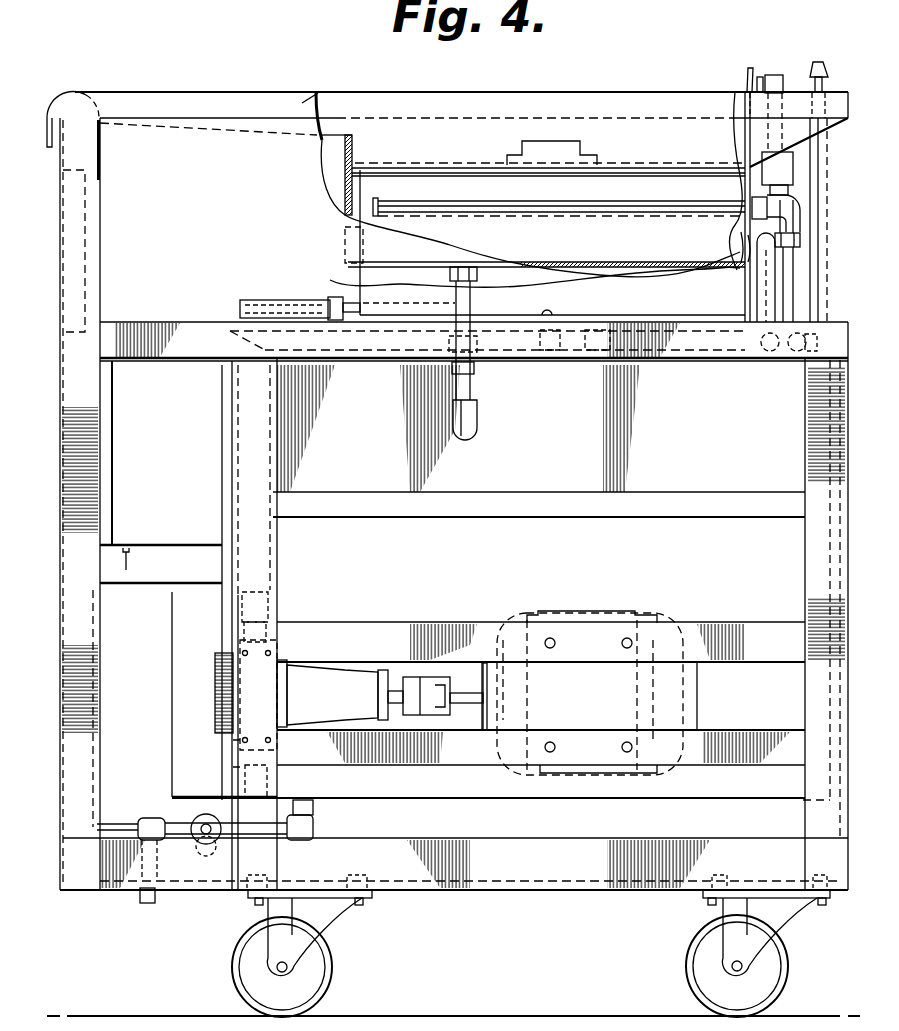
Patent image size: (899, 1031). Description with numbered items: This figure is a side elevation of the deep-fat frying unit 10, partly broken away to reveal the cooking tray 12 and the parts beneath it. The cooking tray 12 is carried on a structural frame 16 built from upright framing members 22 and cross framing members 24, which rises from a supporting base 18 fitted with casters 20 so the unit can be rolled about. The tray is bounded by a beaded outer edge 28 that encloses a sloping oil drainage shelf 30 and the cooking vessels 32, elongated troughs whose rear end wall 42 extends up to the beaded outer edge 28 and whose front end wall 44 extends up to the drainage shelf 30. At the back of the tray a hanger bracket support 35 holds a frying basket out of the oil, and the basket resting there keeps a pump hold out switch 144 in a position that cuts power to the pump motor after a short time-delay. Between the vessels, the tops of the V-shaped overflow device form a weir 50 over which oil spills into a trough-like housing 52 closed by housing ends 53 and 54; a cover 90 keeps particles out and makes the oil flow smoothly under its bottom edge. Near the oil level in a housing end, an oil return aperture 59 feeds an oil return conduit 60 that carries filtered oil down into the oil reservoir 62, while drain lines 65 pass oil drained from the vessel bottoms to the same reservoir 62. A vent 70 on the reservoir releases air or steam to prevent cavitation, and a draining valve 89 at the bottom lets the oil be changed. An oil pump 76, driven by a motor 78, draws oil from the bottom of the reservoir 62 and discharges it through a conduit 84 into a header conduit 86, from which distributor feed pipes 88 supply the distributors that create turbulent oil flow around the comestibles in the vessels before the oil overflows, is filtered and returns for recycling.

The deep-fat frying unit 10 is at (641, 90).
The cooking tray 12 is at (330, 134).
The structural frame 16 is at (58, 372).
The supporting base 18 is at (97, 891).
The casters 20 is at (331, 961).
The upright framing members 22 is at (78, 653).
The cross framing members 24 is at (173, 322).
The beaded outer edge 28 is at (50, 106).
The sloping oil drainage shelf 30 is at (352, 138).
The cooking vessels 32 is at (379, 186).
The hanger bracket supports 35 is at (752, 67).
The rear end wall 42 is at (735, 192).
The front end wall 44 is at (323, 176).
The weir 50 is at (440, 178).
The trough-like housing 52 is at (378, 284).
The housing end 53 is at (360, 277).
The housing end 54 is at (740, 298).
The oil return aperture 59 is at (736, 240).
The oil return conduit 60 is at (767, 277).
The oil reservoir 62 is at (492, 559).
The drain lines 65 is at (472, 388).
The vent 70 is at (820, 63).
The oil pump 76 is at (222, 684).
The motor 78 is at (597, 616).
The conduit 84 is at (222, 432).
The header conduit 86 is at (791, 365).
The distributor feed pipes 88 is at (613, 214).
The draining valve 89 is at (200, 816).
The cover 90 is at (640, 158).
The pump hold out switch 144 is at (763, 73).